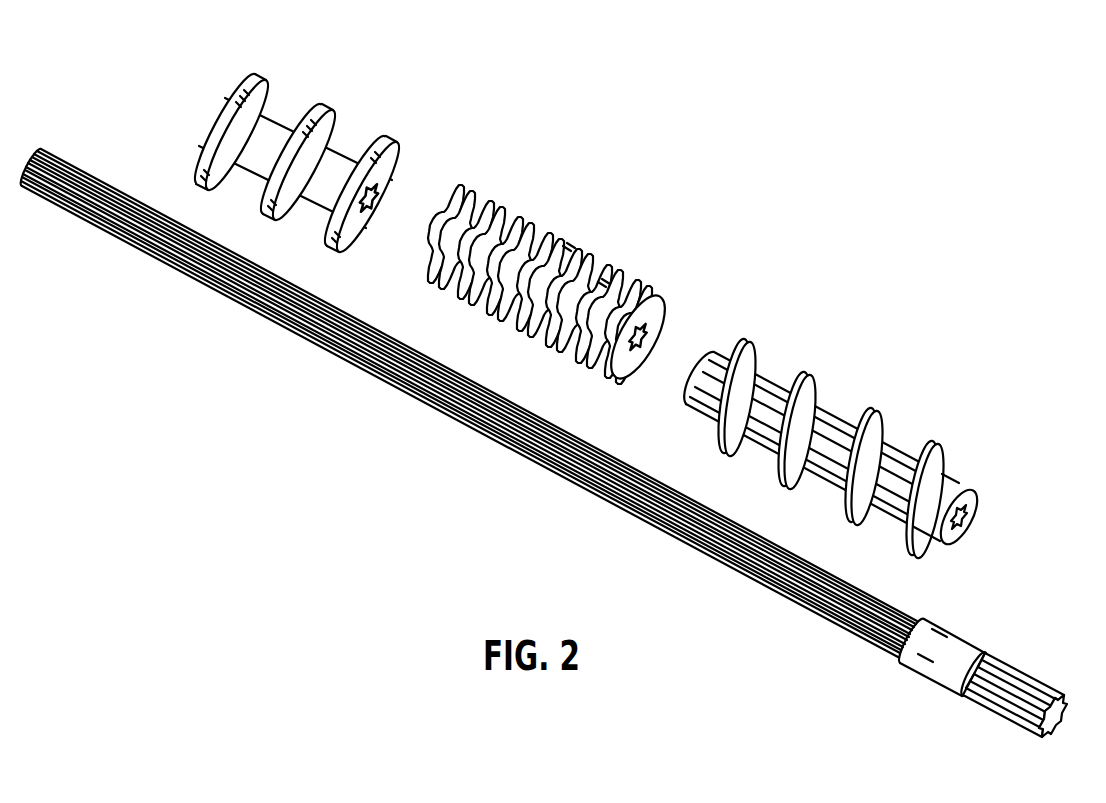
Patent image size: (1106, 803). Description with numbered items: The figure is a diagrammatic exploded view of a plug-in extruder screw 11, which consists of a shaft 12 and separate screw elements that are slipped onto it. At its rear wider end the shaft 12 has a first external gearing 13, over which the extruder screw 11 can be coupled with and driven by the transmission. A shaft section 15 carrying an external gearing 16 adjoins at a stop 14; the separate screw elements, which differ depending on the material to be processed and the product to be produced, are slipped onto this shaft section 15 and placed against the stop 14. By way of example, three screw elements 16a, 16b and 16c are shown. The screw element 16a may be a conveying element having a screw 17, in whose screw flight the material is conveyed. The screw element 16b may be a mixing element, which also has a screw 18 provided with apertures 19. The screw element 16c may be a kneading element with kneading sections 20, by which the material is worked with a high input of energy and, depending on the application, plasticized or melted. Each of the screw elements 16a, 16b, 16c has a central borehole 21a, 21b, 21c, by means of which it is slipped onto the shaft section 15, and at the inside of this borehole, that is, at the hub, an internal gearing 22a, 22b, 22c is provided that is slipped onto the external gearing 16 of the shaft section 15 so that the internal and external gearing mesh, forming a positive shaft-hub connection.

The extruder screw 11 is at (768, 205).
The shaft 12 is at (468, 438).
The first external gearing 13 is at (1037, 652).
The stop 14 is at (898, 667).
The shaft section 15 is at (295, 340).
The external gearing 16 is at (382, 372).
The screw element 16a is at (881, 386).
The screw element 16b is at (579, 221).
The screw element 16c is at (337, 75).
The screw 17 is at (880, 427).
The screw 18 is at (510, 202).
The apertures 19 is at (608, 283).
The kneading sections 20 is at (250, 82).
The central borehole 21a is at (968, 510).
The central borehole 21b is at (660, 327).
The central borehole 21c is at (388, 183).
The internal gearing 22a is at (960, 527).
The internal gearing 22b is at (650, 362).
The internal gearing 22c is at (370, 210).